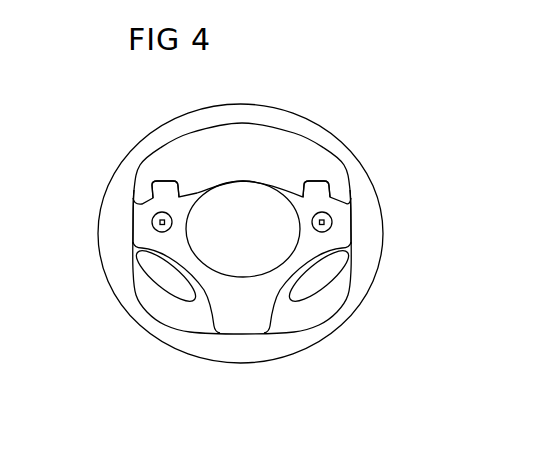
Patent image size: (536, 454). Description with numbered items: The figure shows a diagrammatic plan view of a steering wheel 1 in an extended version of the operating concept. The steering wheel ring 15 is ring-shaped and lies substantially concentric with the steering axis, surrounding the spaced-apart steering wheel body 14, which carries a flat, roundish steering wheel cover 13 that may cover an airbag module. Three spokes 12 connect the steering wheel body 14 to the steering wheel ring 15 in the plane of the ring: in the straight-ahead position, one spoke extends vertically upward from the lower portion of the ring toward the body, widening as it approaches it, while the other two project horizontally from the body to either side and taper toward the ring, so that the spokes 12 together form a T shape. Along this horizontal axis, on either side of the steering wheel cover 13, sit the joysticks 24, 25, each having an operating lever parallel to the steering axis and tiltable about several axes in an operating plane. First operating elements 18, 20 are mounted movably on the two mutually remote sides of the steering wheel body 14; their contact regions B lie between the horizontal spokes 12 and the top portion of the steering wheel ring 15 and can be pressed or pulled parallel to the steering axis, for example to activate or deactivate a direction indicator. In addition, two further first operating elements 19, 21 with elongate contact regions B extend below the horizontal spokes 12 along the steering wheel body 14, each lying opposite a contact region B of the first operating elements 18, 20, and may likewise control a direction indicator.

The steering wheel 1 is at (396, 411).
The spokes 12 is at (142, 222).
The steering wheel cover 13 is at (242, 260).
The steering wheel body 14 is at (230, 172).
The steering wheel ring 15 is at (307, 127).
The first operating element 18 is at (165, 188).
The further first operating element 19 is at (160, 280).
The first operating element 20 is at (316, 179).
The further first operating element 21 is at (314, 280).
The joystick 24 is at (160, 223).
The joystick 25 is at (323, 221).
The contact regions B is at (173, 187).